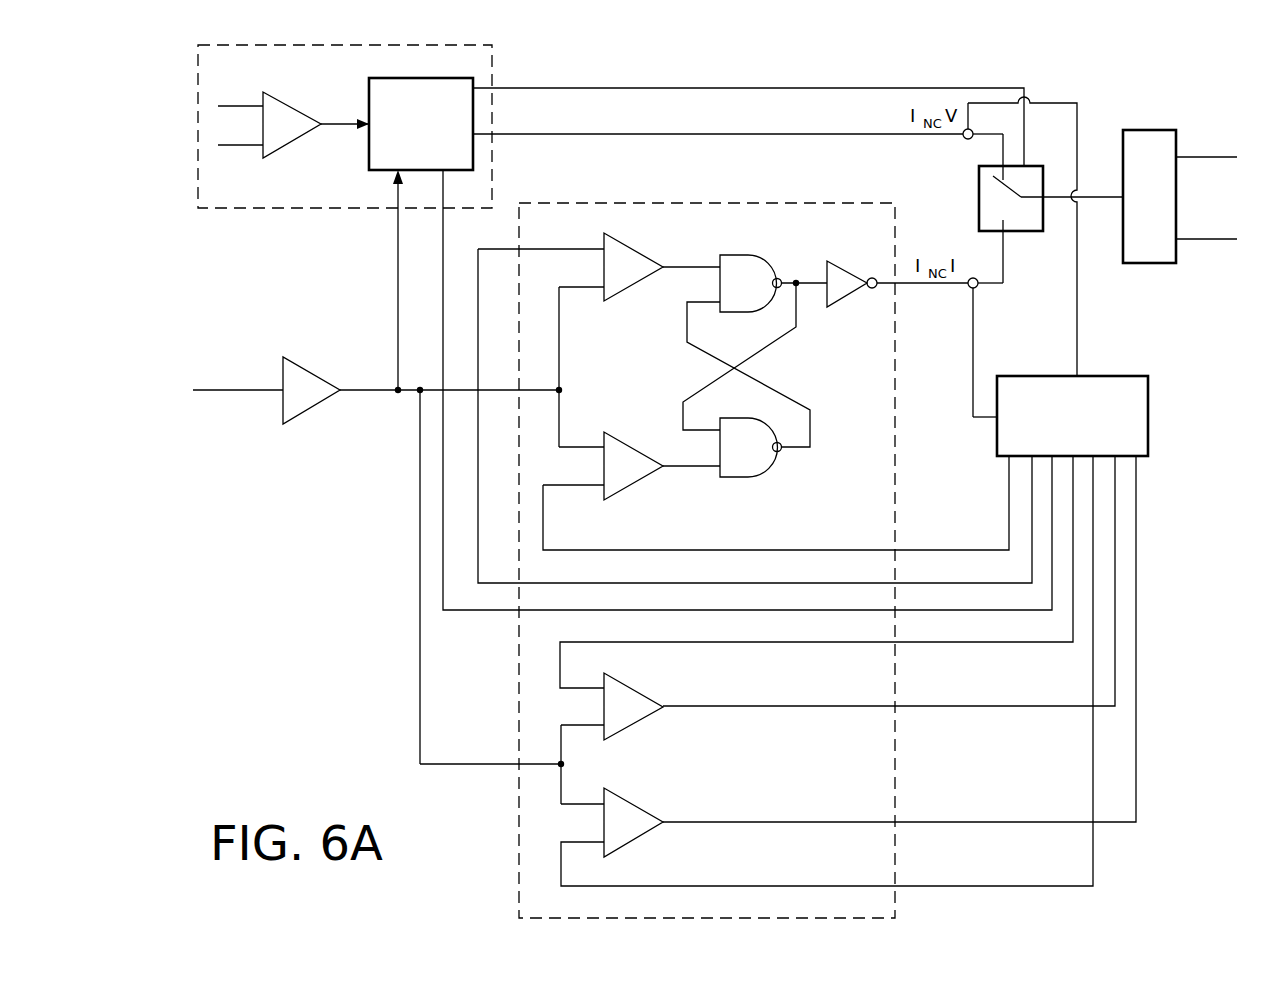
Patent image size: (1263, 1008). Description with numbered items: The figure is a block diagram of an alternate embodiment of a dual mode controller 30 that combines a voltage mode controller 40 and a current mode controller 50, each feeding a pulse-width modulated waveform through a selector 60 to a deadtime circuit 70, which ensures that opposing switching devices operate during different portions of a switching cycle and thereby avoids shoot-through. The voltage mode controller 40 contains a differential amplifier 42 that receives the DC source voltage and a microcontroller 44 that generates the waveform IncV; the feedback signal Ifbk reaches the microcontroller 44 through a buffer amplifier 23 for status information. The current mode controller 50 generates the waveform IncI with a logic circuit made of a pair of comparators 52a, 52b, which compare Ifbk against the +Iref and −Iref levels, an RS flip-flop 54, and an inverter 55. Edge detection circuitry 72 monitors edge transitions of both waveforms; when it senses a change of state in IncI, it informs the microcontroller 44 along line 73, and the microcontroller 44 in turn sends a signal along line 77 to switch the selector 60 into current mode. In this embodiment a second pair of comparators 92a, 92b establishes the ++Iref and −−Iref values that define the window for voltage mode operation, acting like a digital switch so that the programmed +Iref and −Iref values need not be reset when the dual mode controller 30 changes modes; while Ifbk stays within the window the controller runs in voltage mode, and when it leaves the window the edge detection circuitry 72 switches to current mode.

The buffer amplifier 23 is at (313, 371).
The dual mode controller 30 is at (353, 542).
The voltage mode controller 40 is at (243, 210).
The differential amplifier 42 is at (289, 143).
The microcontroller 44 is at (368, 147).
The current mode controller 50 is at (896, 463).
The comparator 52a is at (638, 252).
The comparator 52b is at (637, 482).
The RS flip-flop 54 is at (820, 481).
The inverter 55 is at (854, 270).
The selector 60 is at (1028, 232).
The deadtime circuit 70 is at (1149, 129).
The edge detection circuitry 72 is at (1148, 418).
The line 73 is at (478, 612).
The line 77 is at (988, 86).
The comparator 92a is at (637, 692).
The comparator 92b is at (637, 807).